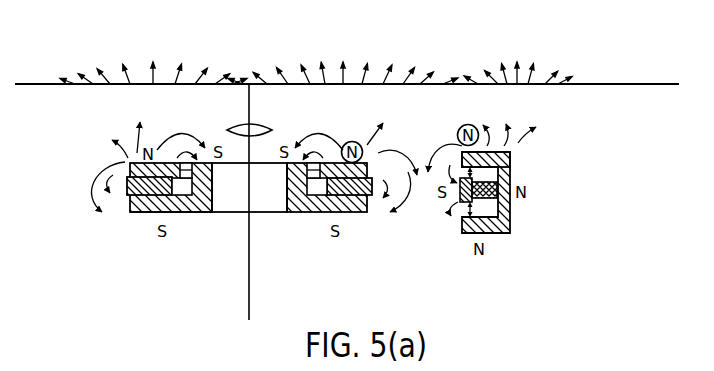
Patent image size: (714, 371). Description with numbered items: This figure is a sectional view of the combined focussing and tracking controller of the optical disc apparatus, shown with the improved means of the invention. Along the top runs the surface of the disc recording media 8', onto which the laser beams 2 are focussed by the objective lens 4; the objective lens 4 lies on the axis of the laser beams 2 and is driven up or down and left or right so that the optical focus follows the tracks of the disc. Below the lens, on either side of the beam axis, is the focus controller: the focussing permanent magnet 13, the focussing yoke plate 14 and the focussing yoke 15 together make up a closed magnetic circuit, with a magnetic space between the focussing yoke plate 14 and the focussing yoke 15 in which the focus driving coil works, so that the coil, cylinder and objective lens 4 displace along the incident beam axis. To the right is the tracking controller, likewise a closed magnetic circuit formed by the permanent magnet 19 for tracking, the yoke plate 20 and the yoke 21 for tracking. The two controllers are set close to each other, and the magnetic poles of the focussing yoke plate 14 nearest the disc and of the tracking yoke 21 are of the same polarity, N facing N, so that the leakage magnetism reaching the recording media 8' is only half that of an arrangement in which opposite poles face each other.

The disc recording media 8' is at (645, 54).
The laser beams 2 is at (249, 263).
The objective lens 4 is at (265, 122).
The focussing permanent magnet 13 is at (127, 194).
The focussing yoke plate 14 is at (126, 181).
The focussing yoke 15 is at (148, 212).
The permanent magnet for tracking operation 19 is at (507, 198).
The yoke plate for tracking operation 20 is at (476, 200).
The yoke for tracking operation 21 is at (505, 167).